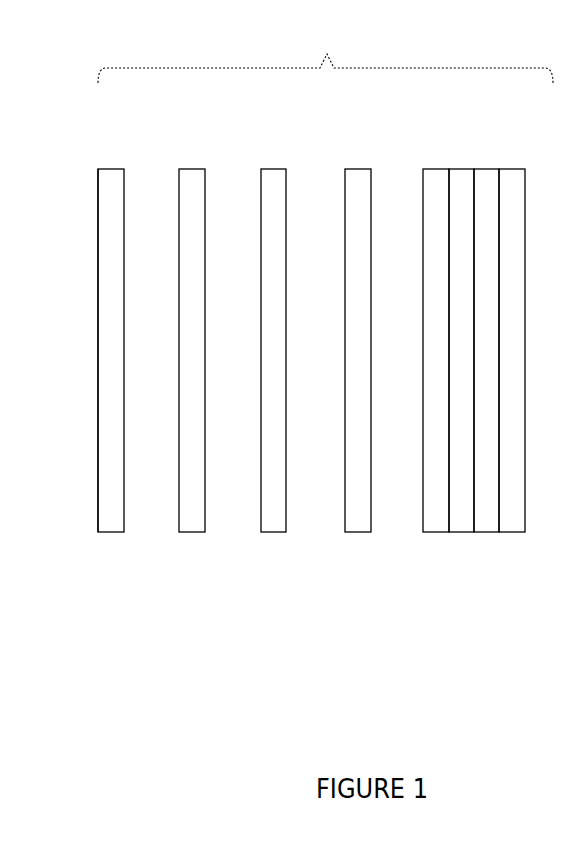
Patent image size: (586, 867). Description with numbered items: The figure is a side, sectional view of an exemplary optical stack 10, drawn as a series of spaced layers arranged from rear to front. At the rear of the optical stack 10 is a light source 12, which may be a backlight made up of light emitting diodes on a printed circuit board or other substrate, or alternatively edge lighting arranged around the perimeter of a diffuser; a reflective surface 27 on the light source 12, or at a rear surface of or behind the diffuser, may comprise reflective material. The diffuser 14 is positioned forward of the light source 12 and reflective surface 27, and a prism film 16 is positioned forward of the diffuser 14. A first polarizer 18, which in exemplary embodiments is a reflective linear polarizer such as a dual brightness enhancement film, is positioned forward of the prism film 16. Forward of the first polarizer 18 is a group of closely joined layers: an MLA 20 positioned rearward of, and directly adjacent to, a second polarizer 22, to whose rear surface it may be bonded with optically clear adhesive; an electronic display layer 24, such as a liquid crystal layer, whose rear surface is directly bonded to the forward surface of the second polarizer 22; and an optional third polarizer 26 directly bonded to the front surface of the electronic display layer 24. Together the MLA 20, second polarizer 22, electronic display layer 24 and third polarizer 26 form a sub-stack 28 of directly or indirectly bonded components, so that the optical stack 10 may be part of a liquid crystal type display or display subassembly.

The optical stack 10 is at (325, 52).
The light source 12 is at (108, 535).
The diffuser 14 is at (188, 535).
The prism film 16 is at (275, 535).
The first polarizer 18 is at (362, 535).
The MLA 20 is at (437, 535).
The second polarizer 22 is at (462, 168).
The electronic display layer 24 is at (487, 535).
The third polarizer 26 is at (513, 168).
The reflective surface 27 is at (98, 297).
The sub-stack 28 is at (474, 408).